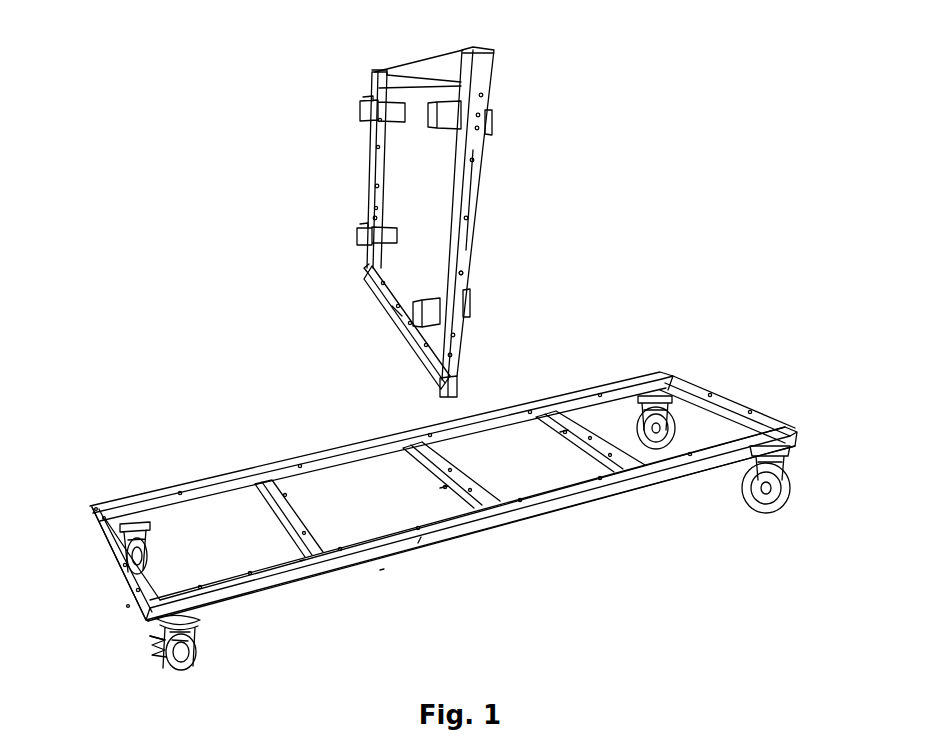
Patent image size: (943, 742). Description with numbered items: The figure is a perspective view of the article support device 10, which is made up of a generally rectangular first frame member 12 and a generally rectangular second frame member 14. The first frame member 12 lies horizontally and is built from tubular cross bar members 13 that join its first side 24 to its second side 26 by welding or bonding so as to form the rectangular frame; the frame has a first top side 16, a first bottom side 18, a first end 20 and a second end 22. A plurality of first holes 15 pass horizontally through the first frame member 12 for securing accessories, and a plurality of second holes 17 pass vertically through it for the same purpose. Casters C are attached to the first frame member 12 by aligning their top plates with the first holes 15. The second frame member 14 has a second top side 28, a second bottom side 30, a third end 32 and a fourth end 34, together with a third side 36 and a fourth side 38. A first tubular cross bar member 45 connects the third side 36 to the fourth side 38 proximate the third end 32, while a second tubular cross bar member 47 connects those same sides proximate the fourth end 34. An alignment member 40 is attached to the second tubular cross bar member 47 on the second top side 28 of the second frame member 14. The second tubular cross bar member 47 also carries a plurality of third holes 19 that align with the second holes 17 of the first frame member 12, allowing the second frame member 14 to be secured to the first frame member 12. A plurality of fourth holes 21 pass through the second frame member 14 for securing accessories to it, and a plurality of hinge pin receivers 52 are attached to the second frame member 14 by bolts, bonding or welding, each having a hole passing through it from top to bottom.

The article support device 10 is at (478, 622).
The first frame member 12 is at (505, 530).
The tubular cross bar members 13 is at (268, 488).
The second frame member 14 is at (420, 366).
The first holes 15 is at (92, 507).
The first top side 16 is at (374, 540).
The second holes 17 is at (682, 380).
The first bottom side 18 is at (394, 566).
The third holes 19 is at (368, 268).
The first end 20 is at (108, 564).
The fourth holes 21 is at (374, 186).
The second end 22 is at (740, 400).
The first side 24 is at (232, 590).
The second side 26 is at (166, 488).
The second top side 28 is at (462, 172).
The second bottom side 30 is at (482, 180).
The third end 32 is at (380, 72).
The fourth end 34 is at (380, 288).
The third side 36 is at (472, 201).
The fourth side 38 is at (371, 132).
The alignment member 40 is at (412, 330).
The first tubular cross bar member 45 is at (441, 70).
The second tubular cross bar member 47 is at (392, 314).
The hinge pin receivers 52 is at (492, 120).
The casters C is at (184, 658).